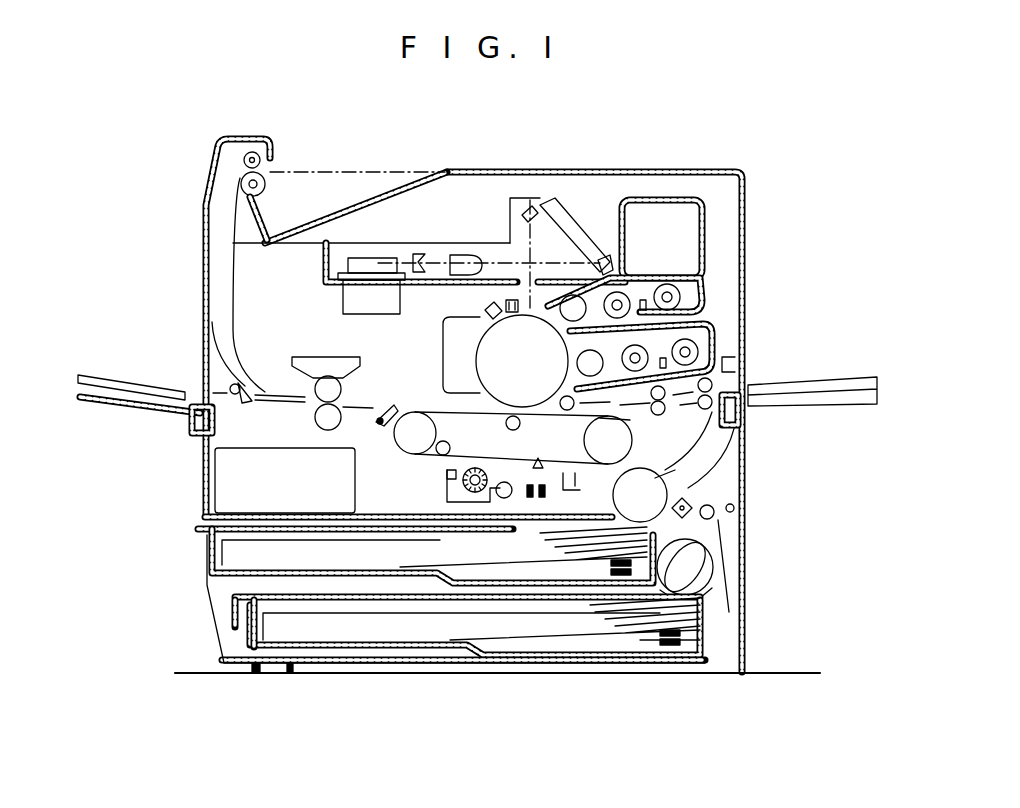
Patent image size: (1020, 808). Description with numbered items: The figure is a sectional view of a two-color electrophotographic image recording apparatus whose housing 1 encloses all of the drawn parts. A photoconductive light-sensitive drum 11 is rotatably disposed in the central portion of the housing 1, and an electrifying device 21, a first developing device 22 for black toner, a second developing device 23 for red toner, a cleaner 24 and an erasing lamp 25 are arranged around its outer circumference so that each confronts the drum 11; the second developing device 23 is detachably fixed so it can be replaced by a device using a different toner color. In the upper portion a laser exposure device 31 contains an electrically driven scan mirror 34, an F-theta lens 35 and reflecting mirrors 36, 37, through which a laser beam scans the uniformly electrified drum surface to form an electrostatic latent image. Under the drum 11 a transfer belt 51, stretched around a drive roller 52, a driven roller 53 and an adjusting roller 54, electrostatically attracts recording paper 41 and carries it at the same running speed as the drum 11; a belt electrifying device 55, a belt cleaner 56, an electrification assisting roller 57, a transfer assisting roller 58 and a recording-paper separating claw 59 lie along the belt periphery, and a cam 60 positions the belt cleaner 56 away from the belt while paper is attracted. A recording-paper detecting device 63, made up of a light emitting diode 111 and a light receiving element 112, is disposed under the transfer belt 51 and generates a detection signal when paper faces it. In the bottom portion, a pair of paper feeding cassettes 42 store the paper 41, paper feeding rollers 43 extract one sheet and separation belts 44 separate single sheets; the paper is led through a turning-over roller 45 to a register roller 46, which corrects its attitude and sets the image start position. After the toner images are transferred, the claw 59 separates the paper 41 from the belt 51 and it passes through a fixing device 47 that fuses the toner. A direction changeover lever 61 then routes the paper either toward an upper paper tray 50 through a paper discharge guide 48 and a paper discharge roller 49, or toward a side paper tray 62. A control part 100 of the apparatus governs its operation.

The two-color image recording apparatus housing 1 is at (742, 200).
The light-sensitive drum 11 is at (548, 242).
The electrifying device 21 is at (510, 300).
The first developing device 22 is at (714, 336).
The second developing device 23 is at (667, 218).
The cleaner 24 is at (458, 317).
The erasing lamp 25 is at (490, 304).
The laser exposure device 31 is at (515, 198).
The scan mirror 34 is at (372, 258).
The Fθ lens 35 is at (418, 254).
The reflecting mirror 36 is at (592, 282).
The reflecting mirror 37 is at (535, 206).
The recording paper 41 is at (714, 540).
The paper feeding cassettes 42 is at (637, 640).
The paper feeding rollers 43 is at (714, 556).
The separation belts 44 is at (708, 592).
The turning-over roller 45 is at (738, 453).
The register roller 46 is at (658, 415).
The fixing device 47 is at (315, 356).
The paper discharge guide 48 is at (200, 226).
The paper discharge roller 49 is at (240, 164).
The upper paper tray 50 is at (345, 205).
The transfer belt 51 is at (426, 412).
The drive roller 52 is at (408, 450).
The driven roller 53 is at (572, 450).
The adjusting roller 54 is at (441, 456).
The belt electrifying device 55 is at (574, 490).
The belt cleaner 56 is at (455, 503).
The electrification assisting roller 57 is at (568, 420).
The transfer assisting roller 58 is at (506, 424).
The recording-paper separating claw 59 is at (381, 410).
The cam 60 is at (503, 498).
The direction changeover lever 61 is at (241, 400).
The side paper tray 62 is at (100, 392).
The recording-paper detecting device 63 is at (451, 618).
The control part 100 is at (205, 478).
The light emitting diode 111 is at (543, 470).
The light receiving element 112 is at (538, 470).